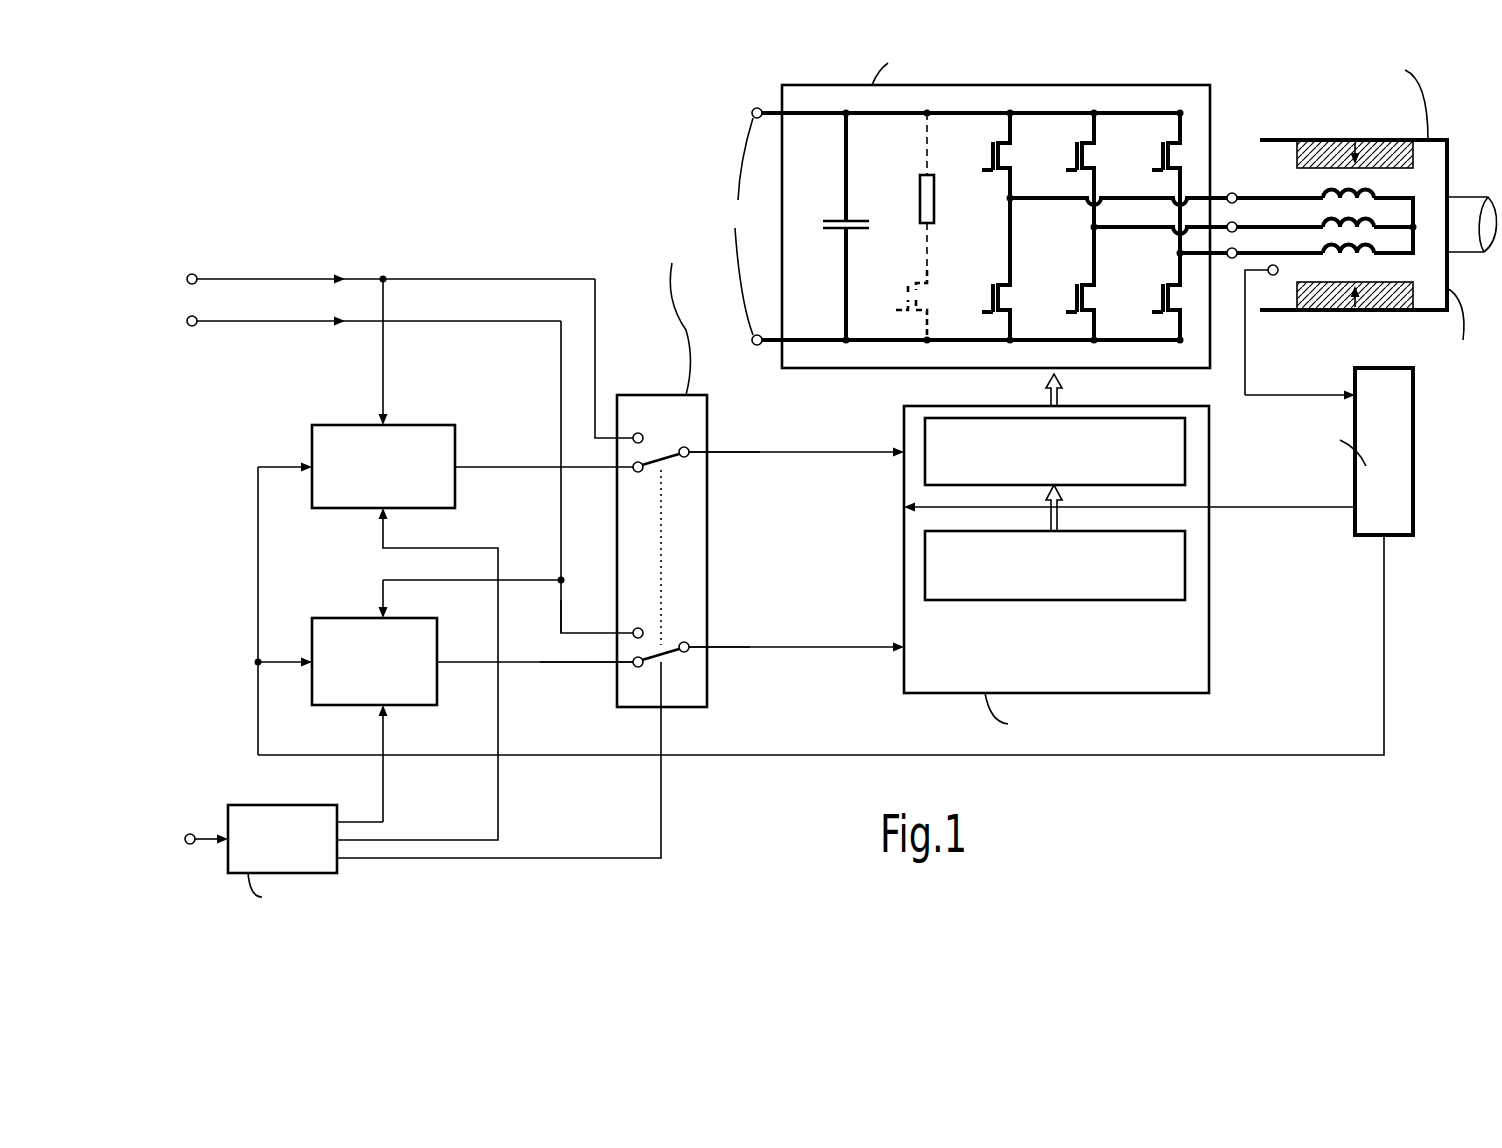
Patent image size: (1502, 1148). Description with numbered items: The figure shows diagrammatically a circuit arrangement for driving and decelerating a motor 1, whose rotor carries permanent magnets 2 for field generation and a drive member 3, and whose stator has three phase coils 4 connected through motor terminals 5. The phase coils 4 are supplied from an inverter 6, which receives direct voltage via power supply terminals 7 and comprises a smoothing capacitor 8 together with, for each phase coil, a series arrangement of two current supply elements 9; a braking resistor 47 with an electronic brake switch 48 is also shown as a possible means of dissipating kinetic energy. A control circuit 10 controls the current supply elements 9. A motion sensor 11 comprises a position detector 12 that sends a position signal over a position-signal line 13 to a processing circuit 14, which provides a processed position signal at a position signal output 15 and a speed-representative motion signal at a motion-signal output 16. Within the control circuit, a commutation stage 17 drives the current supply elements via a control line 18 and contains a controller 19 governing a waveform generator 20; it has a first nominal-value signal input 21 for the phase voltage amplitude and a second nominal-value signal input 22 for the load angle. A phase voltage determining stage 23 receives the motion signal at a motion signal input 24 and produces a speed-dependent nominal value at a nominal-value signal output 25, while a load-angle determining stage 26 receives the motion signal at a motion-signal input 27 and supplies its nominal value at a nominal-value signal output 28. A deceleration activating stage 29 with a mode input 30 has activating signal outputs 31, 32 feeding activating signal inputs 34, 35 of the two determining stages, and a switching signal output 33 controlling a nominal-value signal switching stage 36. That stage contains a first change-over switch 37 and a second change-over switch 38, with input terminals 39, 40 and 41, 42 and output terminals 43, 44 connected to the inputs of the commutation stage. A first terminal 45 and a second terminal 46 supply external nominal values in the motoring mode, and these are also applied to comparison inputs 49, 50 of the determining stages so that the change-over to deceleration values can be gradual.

The motor 1 is at (1448, 152).
The permanent magnets 2 is at (1390, 148).
The drive member 3 is at (1460, 204).
The phase coils 4 is at (1374, 193).
The motor terminals 5 is at (1233, 192).
The inverter 6 is at (1112, 85).
The power supply terminals 7 is at (758, 226).
The smoothing capacitor 8 is at (868, 221).
The current supply elements 9 is at (982, 160).
The control circuit 10 is at (807, 832).
The motion sensor 11 is at (1461, 469).
The position detector 12 is at (1250, 292).
The position-signal line 13 is at (1248, 386).
The processing circuit 14 is at (1413, 505).
The position signal output 15 is at (1331, 508).
The motion-signal output 16 is at (1384, 605).
The commutation stage 17 is at (904, 541).
The control line 18 is at (1047, 396).
The controller 19 is at (938, 601).
The waveform generator 20 is at (933, 486).
The nominal-value signal input 21 is at (820, 455).
The nominal-value signal input 22 is at (872, 663).
The phase voltage determining stage 23 is at (318, 425).
The motion signal input 24 is at (277, 470).
The nominal-value signal output 25 is at (480, 463).
The load-angle determining stage 26 is at (312, 625).
The motion-signal input 27 is at (276, 664).
The nominal-value signal output 28 is at (467, 660).
The deceleration activating stage 29 is at (318, 805).
The input 30 is at (190, 847).
The activating signal output 31 is at (498, 820).
The activating signal output 32 is at (383, 810).
The switching signal output 33 is at (661, 825).
The activating signal input 34 is at (383, 533).
The activating signal input 35 is at (383, 733).
The nominal-value signal switching stage 36 is at (707, 510).
The first change-over switch 37 is at (660, 448).
The second change-over switch 38 is at (664, 644).
The first input terminal 39 is at (595, 312).
The second input terminal 40 is at (580, 471).
The first input terminal 41 is at (573, 632).
The second input terminal 42 is at (594, 665).
The output terminal 43 is at (735, 449).
The output terminal 44 is at (727, 645).
The first terminal 45 is at (195, 273).
The second terminal 46 is at (195, 327).
The braking resistor 47 is at (935, 200).
The electronic brake switch 48 is at (905, 292).
The comparison input 49 is at (383, 391).
The comparison input 50 is at (383, 597).